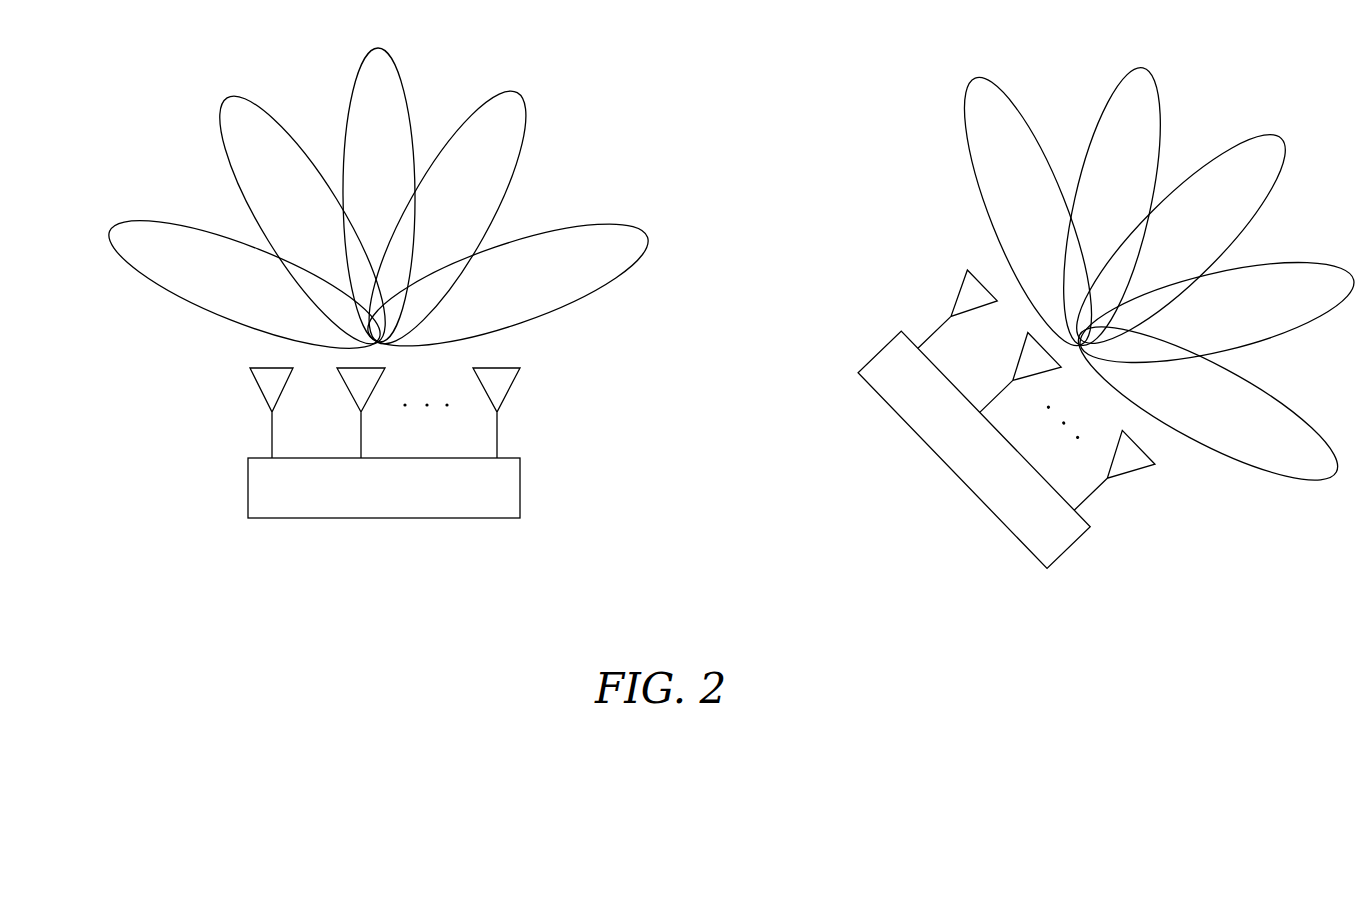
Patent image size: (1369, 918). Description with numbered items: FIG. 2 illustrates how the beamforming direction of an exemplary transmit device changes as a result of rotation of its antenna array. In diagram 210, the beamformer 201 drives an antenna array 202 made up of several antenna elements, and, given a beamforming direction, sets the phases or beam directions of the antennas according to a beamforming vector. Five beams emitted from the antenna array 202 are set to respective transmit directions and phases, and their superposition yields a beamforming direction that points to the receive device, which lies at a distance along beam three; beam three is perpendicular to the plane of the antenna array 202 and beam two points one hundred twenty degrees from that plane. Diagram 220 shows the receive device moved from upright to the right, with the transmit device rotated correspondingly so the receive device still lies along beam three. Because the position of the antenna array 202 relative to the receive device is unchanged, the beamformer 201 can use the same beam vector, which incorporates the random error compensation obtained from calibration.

The beamformer 201 is at (433, 518).
The antenna array 202 is at (500, 410).
The diagram 210 is at (461, 33).
The diagram 220 is at (1116, 27).